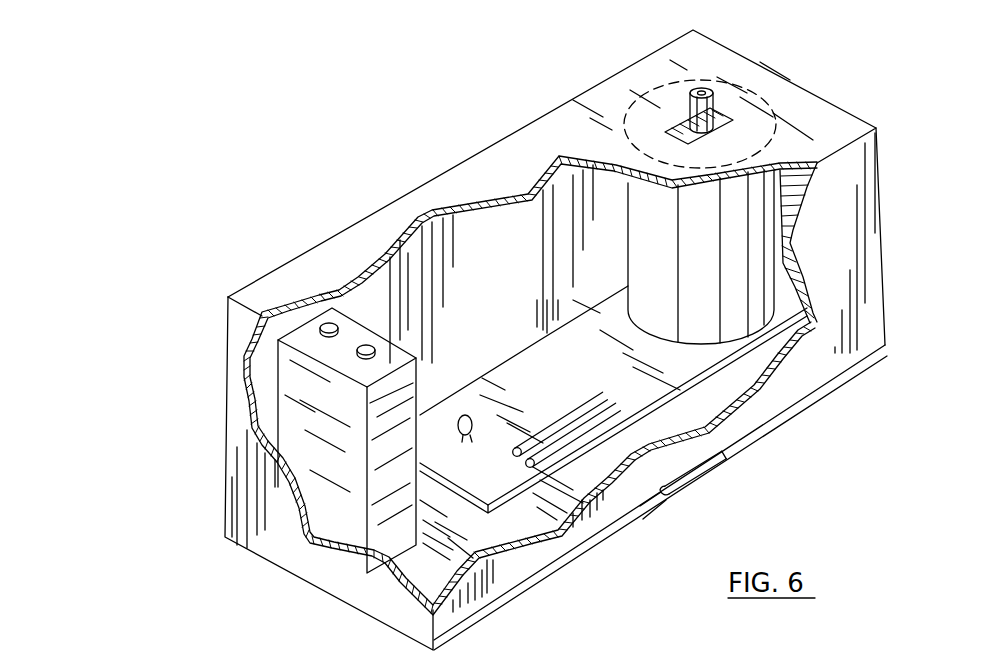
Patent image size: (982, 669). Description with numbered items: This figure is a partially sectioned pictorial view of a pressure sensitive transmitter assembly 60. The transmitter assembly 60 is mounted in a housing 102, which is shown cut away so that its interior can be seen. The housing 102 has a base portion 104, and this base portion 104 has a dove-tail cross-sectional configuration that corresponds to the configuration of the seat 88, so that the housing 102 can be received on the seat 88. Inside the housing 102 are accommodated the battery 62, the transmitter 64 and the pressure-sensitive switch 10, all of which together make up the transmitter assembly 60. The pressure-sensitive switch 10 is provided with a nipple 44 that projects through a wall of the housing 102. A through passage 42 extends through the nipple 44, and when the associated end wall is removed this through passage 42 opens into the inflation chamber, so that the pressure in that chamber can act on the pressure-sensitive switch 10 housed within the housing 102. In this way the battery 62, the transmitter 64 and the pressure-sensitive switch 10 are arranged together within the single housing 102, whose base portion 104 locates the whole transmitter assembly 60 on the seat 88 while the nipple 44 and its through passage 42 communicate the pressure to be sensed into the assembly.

The transmitter assembly 60 is at (903, 240).
The housing 102 is at (562, 112).
The base portion 104 is at (335, 580).
The pressure-sensitive switch 10 is at (783, 228).
The through passage 42 is at (702, 92).
The nipple 44 is at (690, 108).
The battery 62 is at (285, 386).
The transmitter 64 is at (673, 376).
The seat 88 is at (700, 480).